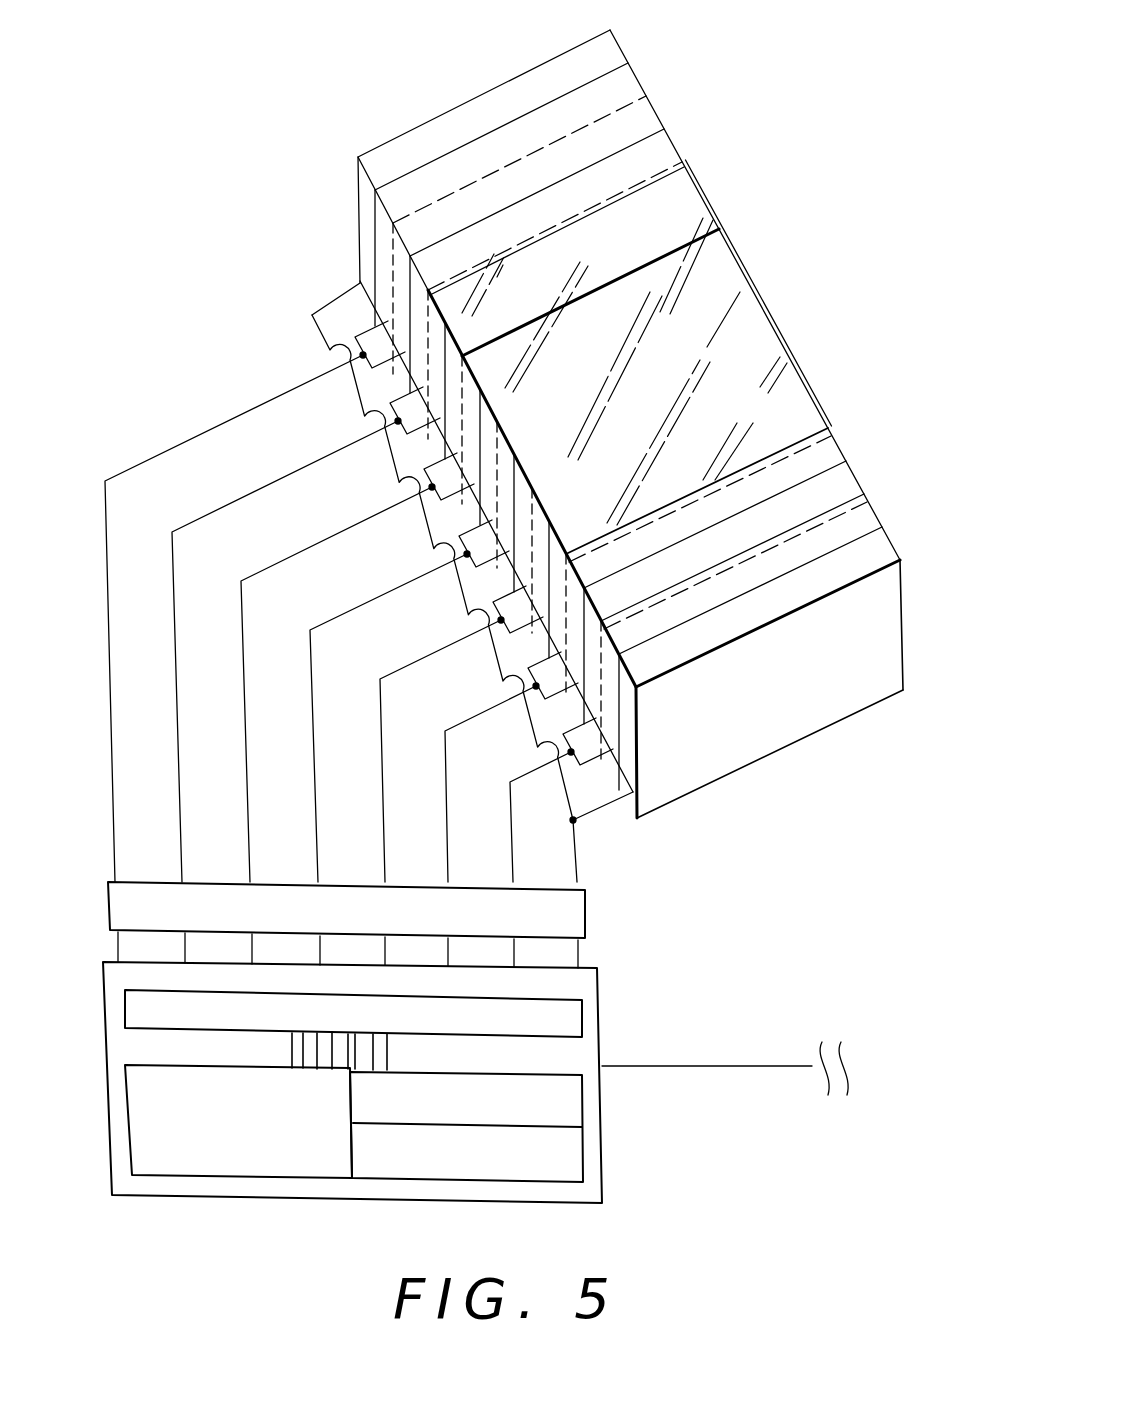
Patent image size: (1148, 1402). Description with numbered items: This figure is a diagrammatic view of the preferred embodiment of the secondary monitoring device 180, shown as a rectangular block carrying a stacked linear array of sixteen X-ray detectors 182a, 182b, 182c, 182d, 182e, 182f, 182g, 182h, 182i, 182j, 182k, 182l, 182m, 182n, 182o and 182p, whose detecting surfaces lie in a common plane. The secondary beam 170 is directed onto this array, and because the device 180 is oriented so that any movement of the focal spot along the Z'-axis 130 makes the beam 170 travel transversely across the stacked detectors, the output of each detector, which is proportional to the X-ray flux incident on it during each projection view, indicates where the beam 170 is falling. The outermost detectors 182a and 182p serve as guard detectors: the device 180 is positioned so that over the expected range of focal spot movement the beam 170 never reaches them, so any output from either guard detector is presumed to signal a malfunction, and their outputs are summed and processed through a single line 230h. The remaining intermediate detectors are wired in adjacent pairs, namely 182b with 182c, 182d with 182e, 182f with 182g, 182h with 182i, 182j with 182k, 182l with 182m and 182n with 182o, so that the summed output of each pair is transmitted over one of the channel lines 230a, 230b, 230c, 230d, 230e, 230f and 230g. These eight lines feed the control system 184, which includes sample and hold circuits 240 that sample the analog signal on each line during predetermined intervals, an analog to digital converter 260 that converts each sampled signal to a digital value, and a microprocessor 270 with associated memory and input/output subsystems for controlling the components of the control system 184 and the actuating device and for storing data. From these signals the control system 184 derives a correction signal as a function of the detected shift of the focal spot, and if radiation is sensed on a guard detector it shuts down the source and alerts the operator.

The Z'-axis 130 is at (637, 272).
The secondary beam 170 is at (517, 281).
The secondary monitoring device 180 is at (748, 693).
The detector 182a is at (622, 46).
The detector 182b is at (640, 80).
The detector 182c is at (658, 113).
The detector 182d is at (676, 146).
The detector 182e is at (694, 179).
The detector 182f is at (713, 212).
The detector 182g is at (731, 245).
The detector 182h is at (749, 278).
The detector 182i is at (767, 311).
The detector 182j is at (785, 344).
The detector 182k is at (803, 378).
The detector 182l is at (821, 411).
The detector 182m is at (839, 444).
The detector 182n is at (857, 477).
The detector 182o is at (875, 510).
The detector 182p is at (894, 543).
The control system 184 is at (475, 1067).
The line 230a is at (115, 866).
The line 230b is at (182, 866).
The line 230c is at (250, 866).
The line 230d is at (318, 866).
The line 230e is at (385, 866).
The line 230f is at (448, 866).
The line 230g is at (540, 850).
The line 230h is at (577, 878).
The sample and hold circuits 240 is at (503, 928).
The analog to digital converter 260 is at (572, 1022).
The microprocessor 270 is at (262, 1155).